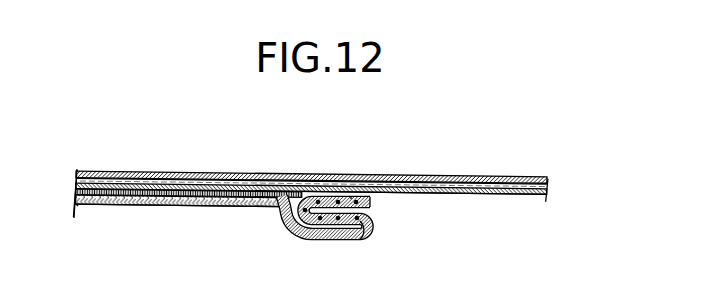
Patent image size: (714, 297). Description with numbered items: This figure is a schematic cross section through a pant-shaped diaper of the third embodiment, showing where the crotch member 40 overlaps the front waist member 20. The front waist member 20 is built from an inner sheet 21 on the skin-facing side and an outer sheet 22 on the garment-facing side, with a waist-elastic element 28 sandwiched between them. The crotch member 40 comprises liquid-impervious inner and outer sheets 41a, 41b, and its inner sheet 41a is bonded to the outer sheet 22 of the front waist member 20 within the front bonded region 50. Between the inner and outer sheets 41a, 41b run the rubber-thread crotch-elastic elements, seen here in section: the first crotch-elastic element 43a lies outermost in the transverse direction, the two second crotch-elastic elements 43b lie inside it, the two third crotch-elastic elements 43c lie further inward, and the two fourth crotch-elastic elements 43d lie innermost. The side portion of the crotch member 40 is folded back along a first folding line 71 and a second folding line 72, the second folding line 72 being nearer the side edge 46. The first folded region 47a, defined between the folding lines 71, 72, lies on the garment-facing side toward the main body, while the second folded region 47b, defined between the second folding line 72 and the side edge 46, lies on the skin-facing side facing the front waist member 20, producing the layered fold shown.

The front waist member 20 is at (96, 158).
The inner sheet 21 is at (489, 175).
The outer sheet 22 is at (497, 191).
The waist-elastic element 28 is at (409, 176).
The crotch member 40 is at (102, 216).
The inner sheet 41a is at (170, 192).
The outer sheet 41b is at (164, 205).
The first crotch-elastic element 43a is at (360, 198).
The second crotch-elastic elements 43b is at (337, 200).
The third crotch-elastic elements 43c is at (304, 240).
The fourth crotch-elastic elements 43d is at (365, 243).
The side edge 46 is at (373, 203).
The first folded region 47a is at (326, 241).
The second folded region 47b is at (351, 197).
The front bonded region 50 is at (133, 205).
The first folding line 71 is at (373, 228).
The second folding line 72 is at (289, 212).